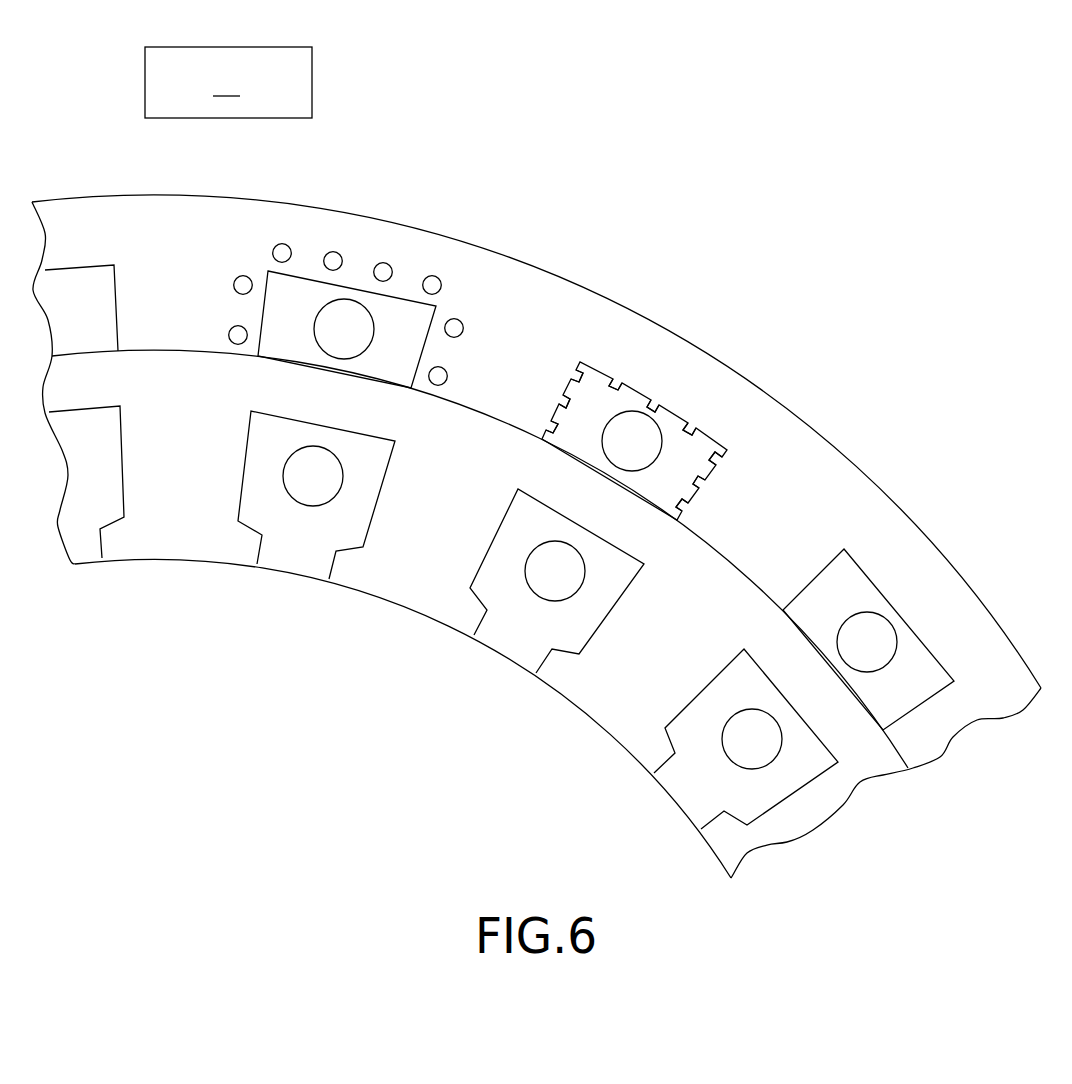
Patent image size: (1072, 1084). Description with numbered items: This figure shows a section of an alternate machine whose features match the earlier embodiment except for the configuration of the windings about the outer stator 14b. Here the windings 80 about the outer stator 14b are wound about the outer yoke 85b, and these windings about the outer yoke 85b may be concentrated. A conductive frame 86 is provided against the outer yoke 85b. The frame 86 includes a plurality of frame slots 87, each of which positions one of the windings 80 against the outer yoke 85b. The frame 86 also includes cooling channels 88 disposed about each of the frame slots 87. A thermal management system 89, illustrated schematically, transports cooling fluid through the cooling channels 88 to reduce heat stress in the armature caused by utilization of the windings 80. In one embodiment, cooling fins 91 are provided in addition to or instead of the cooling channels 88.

The outer stator 14b is at (833, 705).
The coil windings 80 is at (632, 411).
The outer yoke 85b is at (780, 652).
The conductive frame 86 is at (785, 498).
The frame slots 87 is at (693, 427).
The cooling channels 88 is at (337, 253).
The thermal management system 89 is at (230, 120).
The cooling fins 91 is at (618, 381).